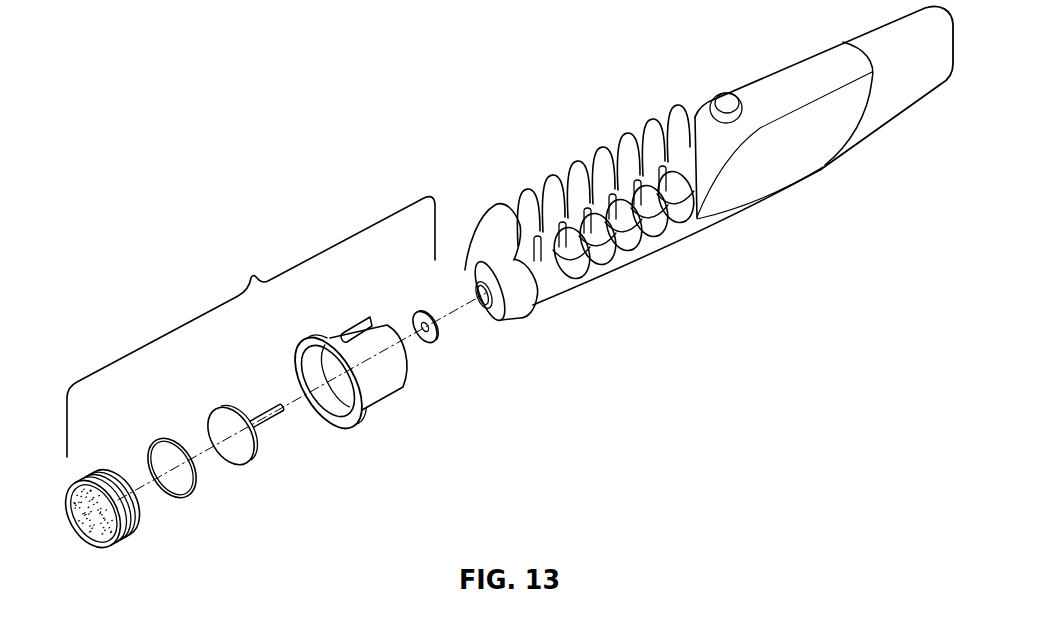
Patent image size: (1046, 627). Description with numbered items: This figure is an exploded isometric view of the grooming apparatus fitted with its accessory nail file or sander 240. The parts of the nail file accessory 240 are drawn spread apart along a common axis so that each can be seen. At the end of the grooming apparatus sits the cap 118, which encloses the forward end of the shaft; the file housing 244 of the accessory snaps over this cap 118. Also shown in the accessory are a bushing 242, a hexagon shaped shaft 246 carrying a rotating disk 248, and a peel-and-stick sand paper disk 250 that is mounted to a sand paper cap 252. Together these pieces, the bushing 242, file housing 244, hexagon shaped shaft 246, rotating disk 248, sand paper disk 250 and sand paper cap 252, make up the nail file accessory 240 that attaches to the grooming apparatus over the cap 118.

The cap 118 is at (523, 295).
The accessory nail file 240 is at (251, 327).
The bushing 242 is at (436, 340).
The file housing 244 is at (385, 388).
The hexagon shaped shaft 246 is at (270, 421).
The rotating disk 248 is at (247, 462).
The peel-and-stick sand paper disk 250 is at (197, 494).
The sand paper cap 252 is at (120, 539).